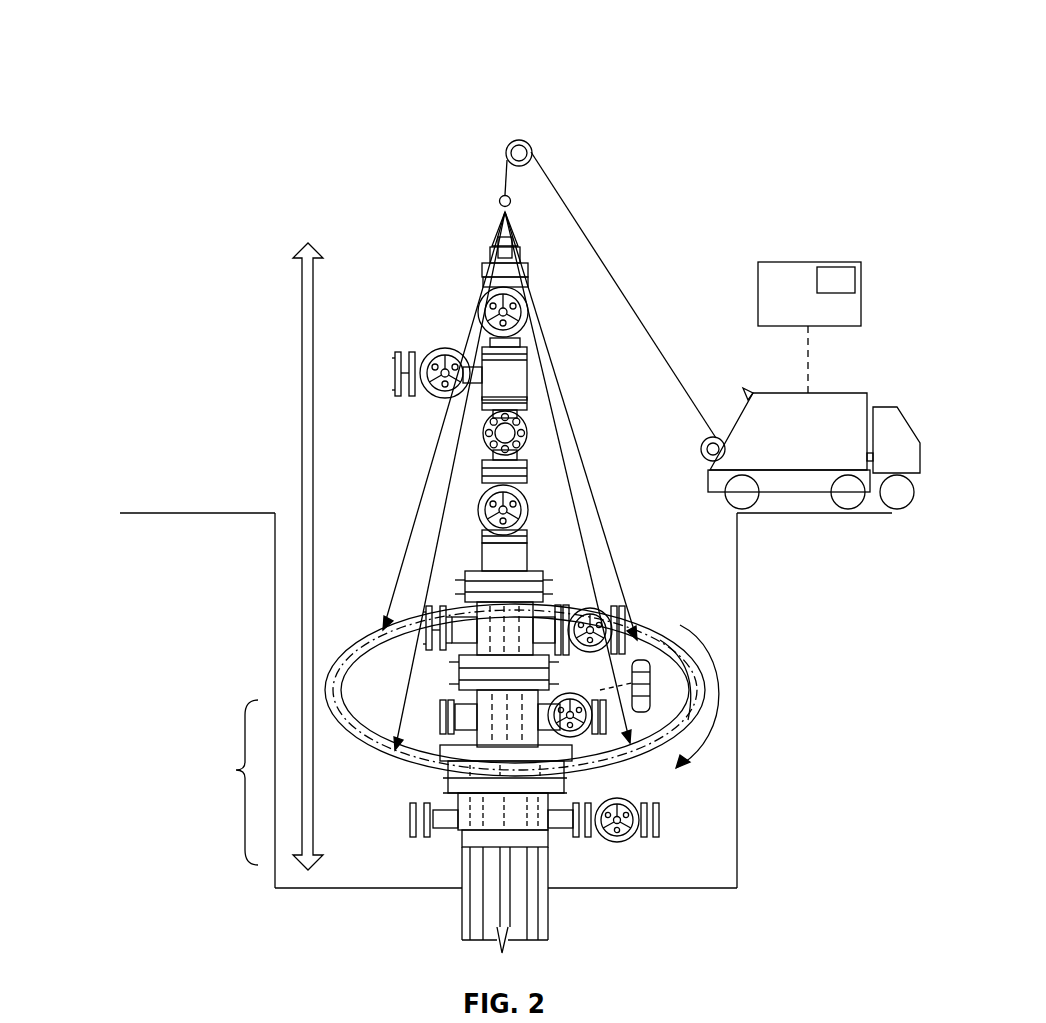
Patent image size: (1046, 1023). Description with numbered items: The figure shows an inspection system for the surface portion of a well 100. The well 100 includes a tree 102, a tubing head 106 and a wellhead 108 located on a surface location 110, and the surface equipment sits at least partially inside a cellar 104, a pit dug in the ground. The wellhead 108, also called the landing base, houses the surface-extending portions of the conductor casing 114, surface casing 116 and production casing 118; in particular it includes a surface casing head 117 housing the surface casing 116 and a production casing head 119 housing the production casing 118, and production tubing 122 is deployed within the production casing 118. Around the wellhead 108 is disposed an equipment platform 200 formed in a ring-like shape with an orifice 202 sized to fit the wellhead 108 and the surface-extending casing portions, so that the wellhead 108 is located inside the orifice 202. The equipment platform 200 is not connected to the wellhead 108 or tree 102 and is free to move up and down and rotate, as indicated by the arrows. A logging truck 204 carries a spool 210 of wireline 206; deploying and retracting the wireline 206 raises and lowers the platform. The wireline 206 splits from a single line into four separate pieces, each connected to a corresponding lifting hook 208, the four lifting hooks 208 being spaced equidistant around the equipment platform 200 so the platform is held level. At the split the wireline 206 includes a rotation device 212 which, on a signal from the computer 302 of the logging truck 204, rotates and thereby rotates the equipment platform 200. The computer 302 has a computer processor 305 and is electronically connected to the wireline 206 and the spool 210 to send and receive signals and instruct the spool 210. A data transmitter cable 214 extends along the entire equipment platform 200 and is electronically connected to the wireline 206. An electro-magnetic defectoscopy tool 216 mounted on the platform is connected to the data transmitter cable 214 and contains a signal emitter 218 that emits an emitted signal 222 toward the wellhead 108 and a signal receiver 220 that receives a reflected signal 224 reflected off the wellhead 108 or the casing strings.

The well 100 is at (274, 50).
The tree 102 is at (480, 310).
The cellar 104 is at (291, 522).
The tubing head 106 is at (446, 603).
The wellhead 108 is at (224, 782).
The surface location 110 is at (146, 455).
The conductor casing 114 is at (549, 881).
The surface casing 116 is at (471, 880).
The surface casing head 117 is at (410, 820).
The production casing 118 is at (483, 934).
The production casing head 119 is at (453, 716).
The production tubing 122 is at (511, 893).
The equipment platform 200 is at (325, 692).
The orifice 202 is at (420, 640).
The logging truck 204 is at (803, 494).
The wireline 206 is at (581, 213).
The lifting hooks 208 is at (378, 636).
The spool 210 is at (701, 450).
The rotation device 212 is at (499, 202).
The data transmitter cable 214 is at (594, 760).
The electro-magnetic defectoscopy tool 216 is at (655, 682).
The signal emitter 218 is at (665, 668).
The signal receiver 220 is at (648, 700).
The emitted signal 222 is at (638, 648).
The reflected signal 224 is at (690, 762).
The computer 302 is at (800, 258).
The computer processor 305 is at (858, 276).